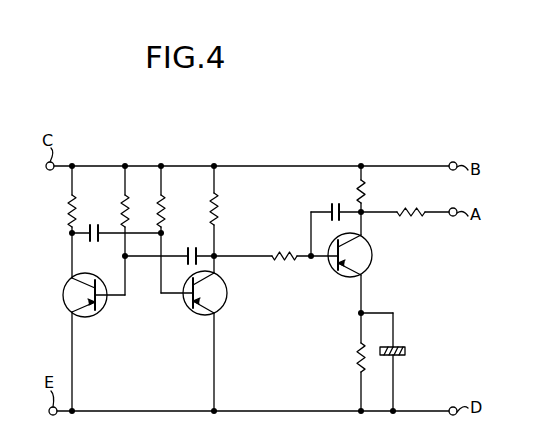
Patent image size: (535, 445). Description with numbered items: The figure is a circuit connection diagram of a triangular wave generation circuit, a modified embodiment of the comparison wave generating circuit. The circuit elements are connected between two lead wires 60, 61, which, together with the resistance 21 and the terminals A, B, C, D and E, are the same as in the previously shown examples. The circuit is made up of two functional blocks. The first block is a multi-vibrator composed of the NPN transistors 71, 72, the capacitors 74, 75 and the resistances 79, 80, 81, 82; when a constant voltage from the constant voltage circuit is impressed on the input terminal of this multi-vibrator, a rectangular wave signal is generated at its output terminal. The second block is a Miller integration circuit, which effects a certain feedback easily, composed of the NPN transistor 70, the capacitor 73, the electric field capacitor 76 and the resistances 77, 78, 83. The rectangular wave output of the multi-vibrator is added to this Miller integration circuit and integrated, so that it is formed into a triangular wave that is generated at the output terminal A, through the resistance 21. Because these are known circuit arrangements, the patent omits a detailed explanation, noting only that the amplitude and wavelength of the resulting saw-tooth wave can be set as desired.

The lead wire 60 is at (329, 165).
The lead wire 61 is at (297, 412).
The resistance 81 is at (68, 210).
The capacitor 75 is at (104, 224).
The resistance 80 is at (122, 192).
The resistance 79 is at (157, 215).
The NPN transistor 72 is at (106, 313).
The capacitor 74 is at (186, 247).
The resistance 82 is at (218, 204).
The NPN transistor 71 is at (226, 300).
The resistance 78 is at (284, 248).
The capacitor 73 is at (329, 206).
The resistance 77 is at (366, 199).
The resistance 21 is at (408, 209).
The NPN transistor 70 is at (370, 242).
The resistance 83 is at (356, 358).
The electric field capacitor 76 is at (400, 357).